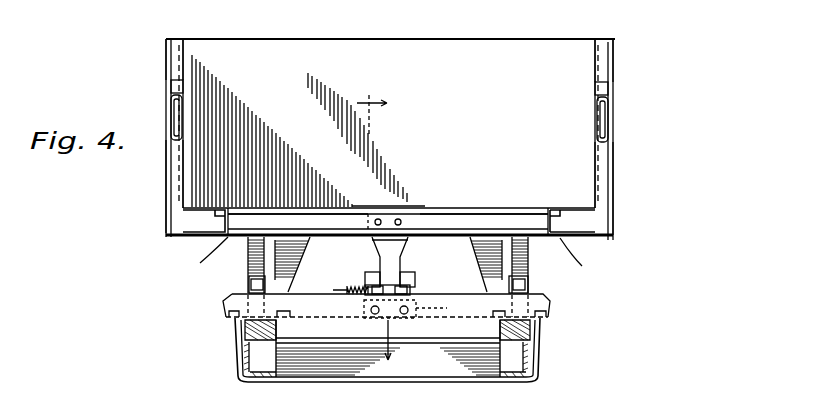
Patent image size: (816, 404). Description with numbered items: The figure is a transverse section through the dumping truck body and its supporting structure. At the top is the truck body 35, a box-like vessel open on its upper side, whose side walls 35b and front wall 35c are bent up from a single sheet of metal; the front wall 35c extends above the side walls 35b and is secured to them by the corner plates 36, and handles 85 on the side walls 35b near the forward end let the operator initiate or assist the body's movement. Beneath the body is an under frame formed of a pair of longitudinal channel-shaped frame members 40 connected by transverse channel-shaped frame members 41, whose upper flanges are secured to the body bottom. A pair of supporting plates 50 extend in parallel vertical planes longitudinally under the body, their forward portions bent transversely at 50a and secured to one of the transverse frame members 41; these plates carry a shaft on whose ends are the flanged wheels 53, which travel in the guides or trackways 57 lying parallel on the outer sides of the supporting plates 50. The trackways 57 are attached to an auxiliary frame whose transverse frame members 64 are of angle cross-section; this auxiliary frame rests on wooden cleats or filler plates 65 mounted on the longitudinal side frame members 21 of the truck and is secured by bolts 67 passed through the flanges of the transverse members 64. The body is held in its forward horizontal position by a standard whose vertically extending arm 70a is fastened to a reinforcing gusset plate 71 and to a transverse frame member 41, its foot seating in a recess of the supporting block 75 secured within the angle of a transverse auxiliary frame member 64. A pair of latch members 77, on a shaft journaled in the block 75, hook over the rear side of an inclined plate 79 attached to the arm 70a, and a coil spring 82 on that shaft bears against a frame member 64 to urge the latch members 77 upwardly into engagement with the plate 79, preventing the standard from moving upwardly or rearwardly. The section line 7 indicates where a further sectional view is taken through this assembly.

The truck body 35 is at (446, 17).
The side walls 35b is at (696, 150).
The front wall 35c is at (474, 83).
The corner plates 36 is at (166, 51).
The handles 85 is at (172, 103).
The section line 7- 7 is at (377, 226).
The transverse channel-shaped frame members 41 is at (430, 216).
The supporting plates 50 is at (270, 231).
The transversely bent forward portions of supporting plates 50a is at (485, 227).
The reinforcing gusset plate 71 is at (381, 205).
The guides or trackways 57 is at (248, 262).
The longitudinal channel-shaped frame members 40 is at (220, 250).
The flanged wheels 53 is at (250, 282).
The vertically extending arm 70a is at (382, 263).
The latch members 77 is at (370, 285).
The plate 79 is at (403, 289).
The coil spring 82 is at (347, 294).
The supporting block 75 is at (386, 308).
The transverse frame members 64 is at (540, 316).
The longitudinal side frame members 21 is at (238, 360).
The bolts 67 is at (230, 322).
The wooden cleats or filler plates 65 is at (250, 330).